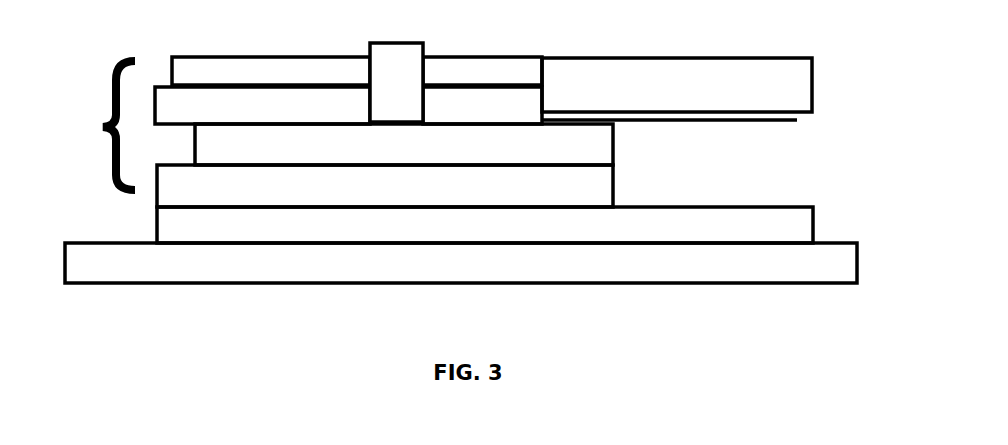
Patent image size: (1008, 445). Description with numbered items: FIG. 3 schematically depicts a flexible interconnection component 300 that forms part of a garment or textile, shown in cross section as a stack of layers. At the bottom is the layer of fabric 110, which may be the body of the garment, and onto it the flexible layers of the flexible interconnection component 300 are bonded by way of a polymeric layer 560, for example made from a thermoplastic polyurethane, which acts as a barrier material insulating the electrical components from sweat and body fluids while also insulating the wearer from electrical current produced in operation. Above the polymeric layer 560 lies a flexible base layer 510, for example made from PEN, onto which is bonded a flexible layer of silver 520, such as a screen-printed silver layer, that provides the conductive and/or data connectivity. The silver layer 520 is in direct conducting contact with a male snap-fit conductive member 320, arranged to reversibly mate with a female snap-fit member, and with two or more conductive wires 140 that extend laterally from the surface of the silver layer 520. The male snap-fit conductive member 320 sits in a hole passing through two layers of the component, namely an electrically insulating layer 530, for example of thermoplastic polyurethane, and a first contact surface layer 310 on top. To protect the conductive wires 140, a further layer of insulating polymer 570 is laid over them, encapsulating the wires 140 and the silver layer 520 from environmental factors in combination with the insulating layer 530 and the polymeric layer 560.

The fabric 110 is at (461, 263).
The polymeric layer 560 is at (485, 225).
The flexible base layer 510 is at (385, 186).
The flexible layer of silver 520 is at (404, 144).
The electrically insulating layer 530 is at (348, 105).
The first contact surface layer 310 is at (357, 71).
The male snap-fit conductive member 320 is at (396, 82).
The insulating polymer layer 570 is at (677, 85).
The conductive wires 140 is at (780, 121).
The flexible interconnection component 300 is at (95, 125).